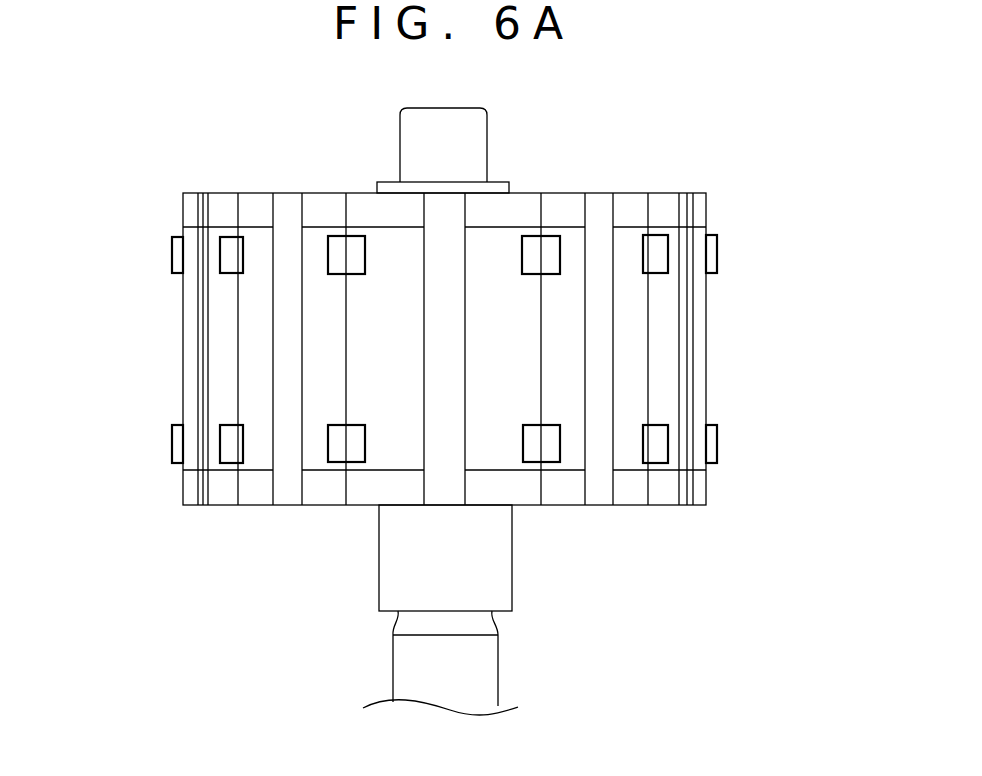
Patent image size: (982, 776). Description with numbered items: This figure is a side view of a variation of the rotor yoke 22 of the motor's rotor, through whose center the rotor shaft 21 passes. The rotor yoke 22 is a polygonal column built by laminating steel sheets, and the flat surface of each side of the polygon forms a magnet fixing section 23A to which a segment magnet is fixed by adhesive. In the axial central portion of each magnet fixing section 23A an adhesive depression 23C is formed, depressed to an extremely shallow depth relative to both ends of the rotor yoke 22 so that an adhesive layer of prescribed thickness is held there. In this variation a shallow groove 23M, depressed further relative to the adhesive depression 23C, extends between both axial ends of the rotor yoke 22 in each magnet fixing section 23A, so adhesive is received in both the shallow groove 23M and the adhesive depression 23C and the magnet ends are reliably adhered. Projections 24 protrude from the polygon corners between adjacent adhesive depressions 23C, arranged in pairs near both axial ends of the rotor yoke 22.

The rotor shaft 21 is at (423, 663).
The rotor yoke 22 is at (591, 192).
The magnet fixing section 23A is at (407, 207).
The adhesive depression 23C is at (402, 453).
The shallow groove 23M is at (440, 379).
The projection 24 is at (337, 263).